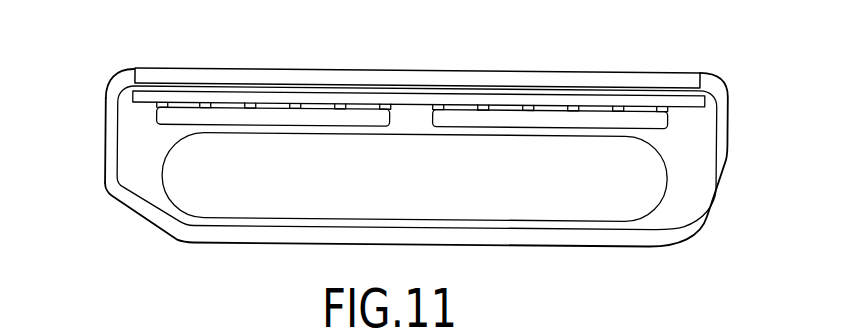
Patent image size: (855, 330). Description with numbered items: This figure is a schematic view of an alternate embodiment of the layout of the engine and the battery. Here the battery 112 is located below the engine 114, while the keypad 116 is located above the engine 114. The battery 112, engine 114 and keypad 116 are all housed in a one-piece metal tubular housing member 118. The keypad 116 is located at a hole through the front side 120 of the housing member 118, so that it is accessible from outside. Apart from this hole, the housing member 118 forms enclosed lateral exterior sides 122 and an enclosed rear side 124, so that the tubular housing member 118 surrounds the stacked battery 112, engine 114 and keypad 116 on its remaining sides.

The battery 112 is at (668, 193).
The engine 114 is at (669, 116).
The keypad 116 is at (415, 71).
The one-piece metal tubular housing member 118 is at (116, 160).
The front side 120 is at (133, 71).
The lateral exterior sides 122 is at (105, 127).
The rear side 124 is at (586, 244).